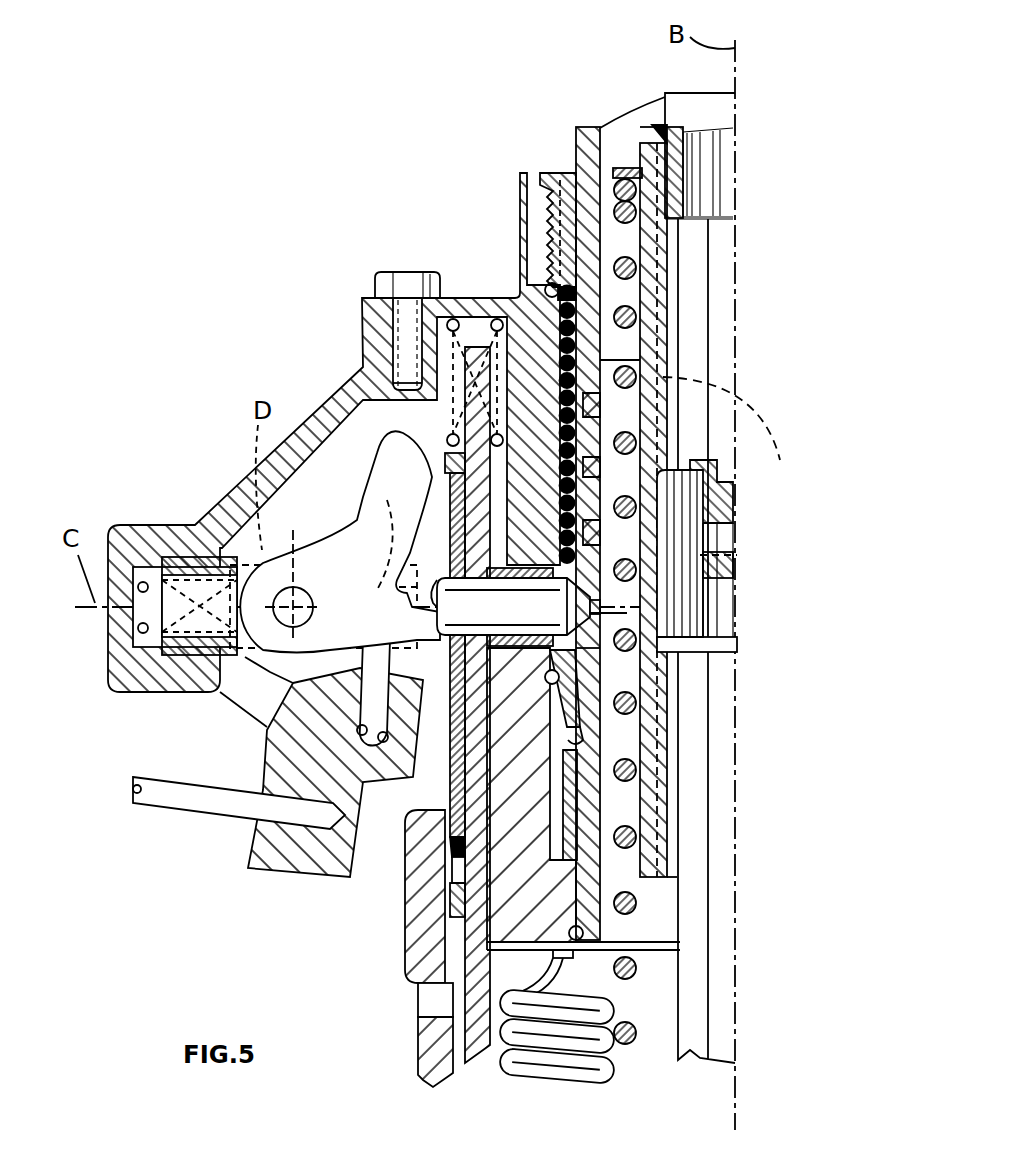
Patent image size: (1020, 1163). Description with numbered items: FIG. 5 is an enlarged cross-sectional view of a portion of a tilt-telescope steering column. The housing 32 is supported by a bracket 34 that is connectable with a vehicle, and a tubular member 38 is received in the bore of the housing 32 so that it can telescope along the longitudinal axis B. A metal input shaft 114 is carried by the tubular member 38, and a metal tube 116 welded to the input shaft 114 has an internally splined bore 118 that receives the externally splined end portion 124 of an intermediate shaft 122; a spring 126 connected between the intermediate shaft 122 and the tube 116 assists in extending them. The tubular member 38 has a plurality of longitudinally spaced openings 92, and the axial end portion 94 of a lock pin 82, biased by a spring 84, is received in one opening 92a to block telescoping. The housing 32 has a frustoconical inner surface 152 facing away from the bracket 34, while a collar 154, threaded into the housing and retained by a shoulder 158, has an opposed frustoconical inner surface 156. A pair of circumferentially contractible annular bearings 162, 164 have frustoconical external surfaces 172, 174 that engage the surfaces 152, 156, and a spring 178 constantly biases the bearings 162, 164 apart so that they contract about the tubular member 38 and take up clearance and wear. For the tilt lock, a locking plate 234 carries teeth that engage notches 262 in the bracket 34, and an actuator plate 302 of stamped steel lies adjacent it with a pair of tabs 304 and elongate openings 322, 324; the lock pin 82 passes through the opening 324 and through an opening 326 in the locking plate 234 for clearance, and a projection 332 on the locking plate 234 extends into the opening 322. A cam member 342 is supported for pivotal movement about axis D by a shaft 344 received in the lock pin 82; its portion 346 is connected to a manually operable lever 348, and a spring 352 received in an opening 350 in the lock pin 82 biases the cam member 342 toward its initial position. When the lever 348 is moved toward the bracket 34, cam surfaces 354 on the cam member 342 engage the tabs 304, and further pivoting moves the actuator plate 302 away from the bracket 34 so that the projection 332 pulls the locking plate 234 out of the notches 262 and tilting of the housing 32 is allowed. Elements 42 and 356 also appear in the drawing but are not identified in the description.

The housing 32 is at (512, 254).
The bracket 34 is at (486, 1070).
The tubular member 38 is at (590, 140).
The spring 42 is at (570, 1066).
The lock pin 82 is at (243, 543).
The spring 84 is at (143, 583).
The openings 92 is at (600, 600).
The opening 92a is at (590, 600).
The axial end portion 94 is at (600, 605).
The input shaft 114 is at (718, 118).
The tube 116 is at (655, 195).
The internally splined bore 118 is at (726, 418).
The intermediate shaft 122 is at (735, 922).
The externally splined end portion 124 is at (705, 565).
The spring 126 is at (620, 262).
The frustoconical inner surface 152 is at (572, 727).
The collar 154 is at (548, 171).
The frustoconical inner surface 156 is at (545, 225).
The shoulder 158 is at (563, 257).
The annular bearing 162 is at (573, 707).
The annular bearing 164 is at (565, 300).
The frustoconical external surface 172 is at (575, 668).
The frustoconical external surface 174 is at (640, 345).
The spring 178 is at (576, 372).
The locking plate 234 is at (478, 930).
The notches 262 is at (455, 1015).
The actuator plate 302 is at (460, 838).
The tabs 304 is at (512, 590).
The elongate opening 322 is at (452, 847).
The elongate opening 324 is at (405, 612).
The opening 326 is at (508, 570).
The projection 332 is at (457, 905).
The cam member 342 is at (355, 500).
The shaft 344 is at (300, 580).
The portion 346 is at (262, 860).
The lever 348 is at (140, 790).
The opening 350 is at (395, 560).
The spring 352 is at (358, 728).
The cam surfaces 354 is at (443, 597).
The tooth 356 is at (398, 458).